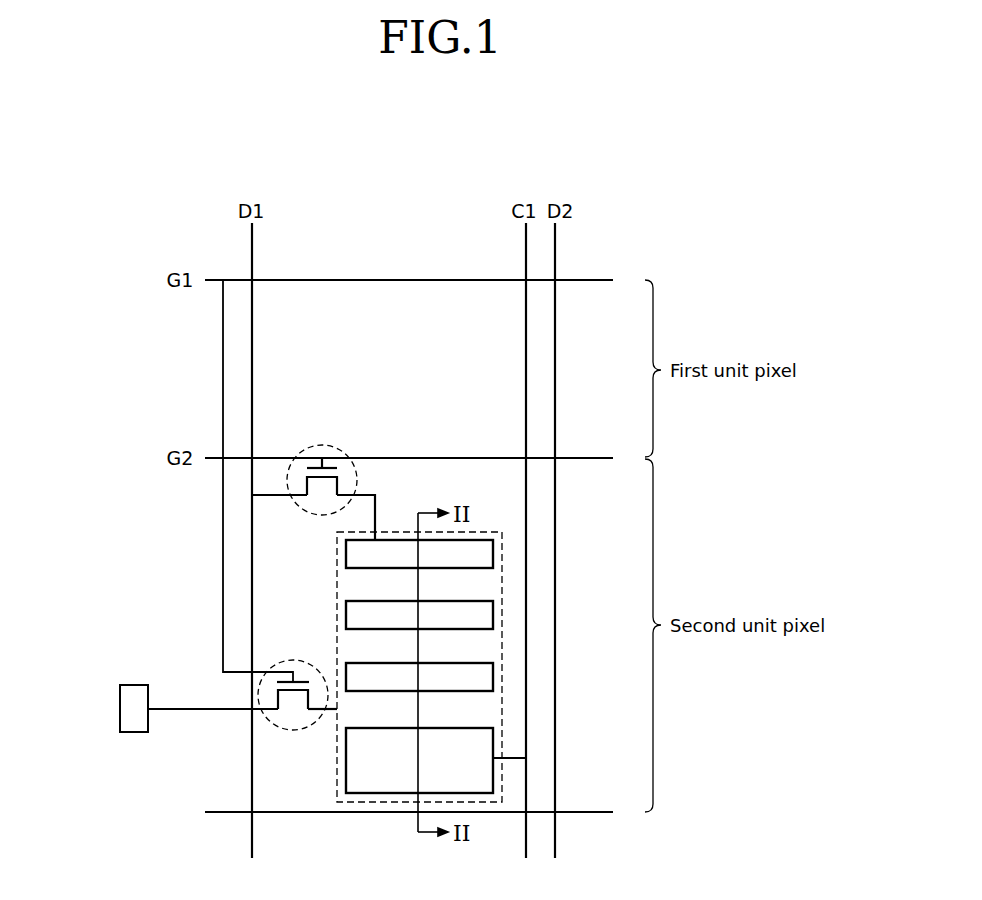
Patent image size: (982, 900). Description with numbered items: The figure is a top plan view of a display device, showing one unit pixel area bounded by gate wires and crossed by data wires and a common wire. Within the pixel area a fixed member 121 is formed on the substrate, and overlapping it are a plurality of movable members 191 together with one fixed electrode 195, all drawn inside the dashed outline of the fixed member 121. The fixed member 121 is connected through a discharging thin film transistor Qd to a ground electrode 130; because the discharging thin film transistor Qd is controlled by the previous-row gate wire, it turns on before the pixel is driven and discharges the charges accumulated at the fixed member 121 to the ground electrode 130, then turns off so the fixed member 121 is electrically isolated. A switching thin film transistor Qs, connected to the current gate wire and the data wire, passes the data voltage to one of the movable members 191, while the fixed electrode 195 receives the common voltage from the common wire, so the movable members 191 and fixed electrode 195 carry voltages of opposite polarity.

The ground electrode 130 is at (120, 708).
The movable member 191 is at (480, 550).
The fixed member 121 is at (502, 710).
The fixed electrode 195 is at (380, 777).
The switching thin film transistor Qs is at (321, 446).
The discharging thin film transistor Qd is at (293, 730).